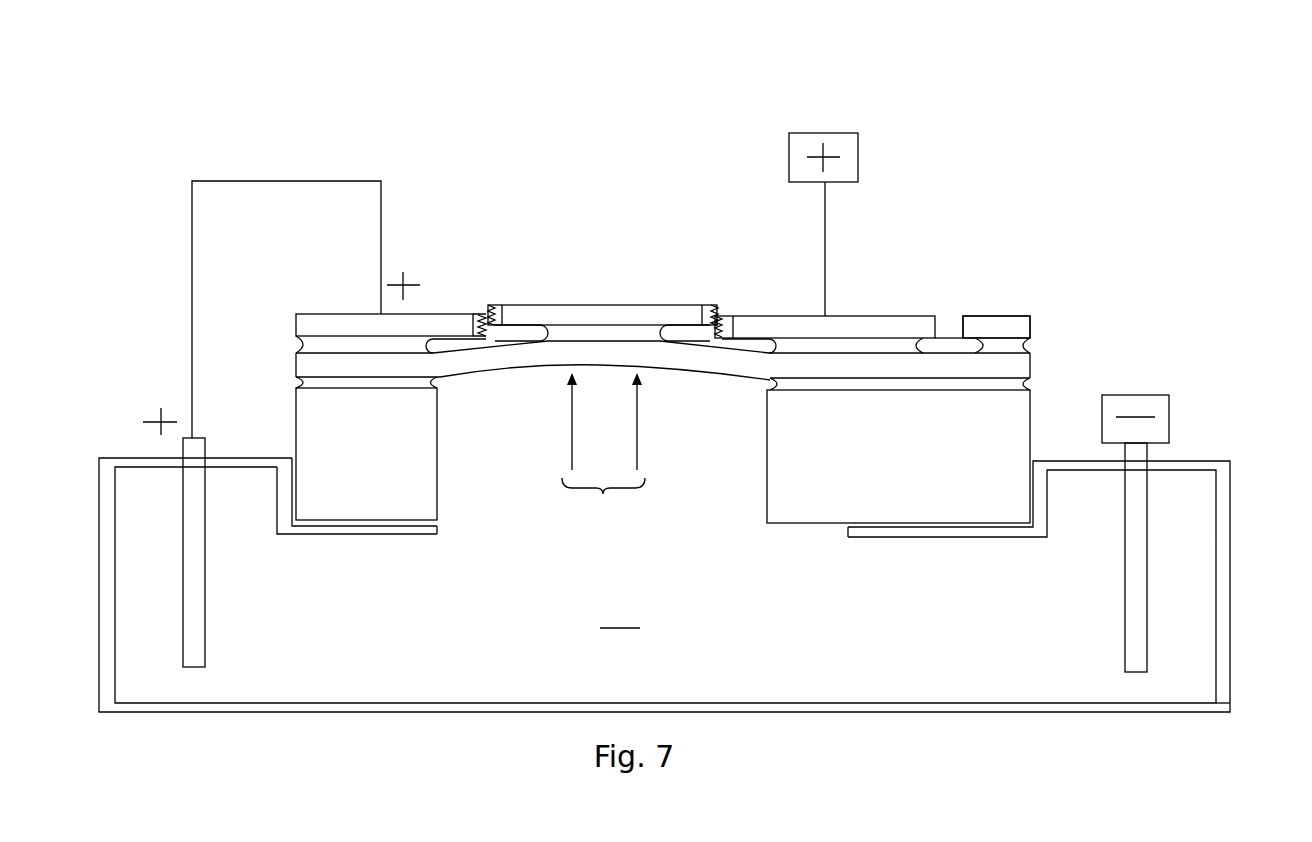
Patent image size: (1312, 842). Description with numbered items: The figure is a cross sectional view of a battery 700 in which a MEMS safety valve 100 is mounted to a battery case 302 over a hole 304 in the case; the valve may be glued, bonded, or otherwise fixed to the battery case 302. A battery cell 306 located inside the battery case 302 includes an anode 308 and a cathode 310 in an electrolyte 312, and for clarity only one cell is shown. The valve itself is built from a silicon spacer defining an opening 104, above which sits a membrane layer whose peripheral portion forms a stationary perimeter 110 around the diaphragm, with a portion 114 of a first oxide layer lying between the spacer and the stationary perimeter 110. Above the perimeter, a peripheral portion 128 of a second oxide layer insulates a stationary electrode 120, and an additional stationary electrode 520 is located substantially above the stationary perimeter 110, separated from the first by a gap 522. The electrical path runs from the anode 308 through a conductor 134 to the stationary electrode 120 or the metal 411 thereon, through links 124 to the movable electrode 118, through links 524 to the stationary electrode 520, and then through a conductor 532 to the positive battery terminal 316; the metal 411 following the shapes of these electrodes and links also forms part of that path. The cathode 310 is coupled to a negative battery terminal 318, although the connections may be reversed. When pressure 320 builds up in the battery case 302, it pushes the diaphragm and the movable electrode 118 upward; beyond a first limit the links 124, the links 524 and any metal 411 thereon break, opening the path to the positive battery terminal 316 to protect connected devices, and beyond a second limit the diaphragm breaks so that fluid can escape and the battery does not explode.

The battery 700 is at (279, 156).
The conductor 134 is at (382, 218).
The stationary electrode 120 is at (317, 323).
The metal 411 is at (438, 315).
The links 124 is at (487, 308).
The movable electrode 118 is at (590, 315).
The links 524 is at (728, 315).
The positive battery terminal 316 is at (850, 153).
The conductor 532 is at (825, 208).
The stationary electrode 520 is at (862, 310).
The gap 522 is at (947, 309).
The peripheral portion 128 is at (1003, 345).
The safety valve 100 is at (1140, 301).
The stationary perimeter 110 is at (385, 362).
The negative battery terminal 318 is at (1158, 408).
The battery case 302 is at (1232, 530).
The battery cell 306 is at (1221, 629).
The cathode 310 is at (1135, 589).
The anode 308 is at (192, 600).
The electrolyte 312 is at (620, 617).
The hole 304 is at (673, 540).
The pressure 320 is at (603, 451).
The opening 104 is at (664, 466).
The portion 114 is at (332, 378).